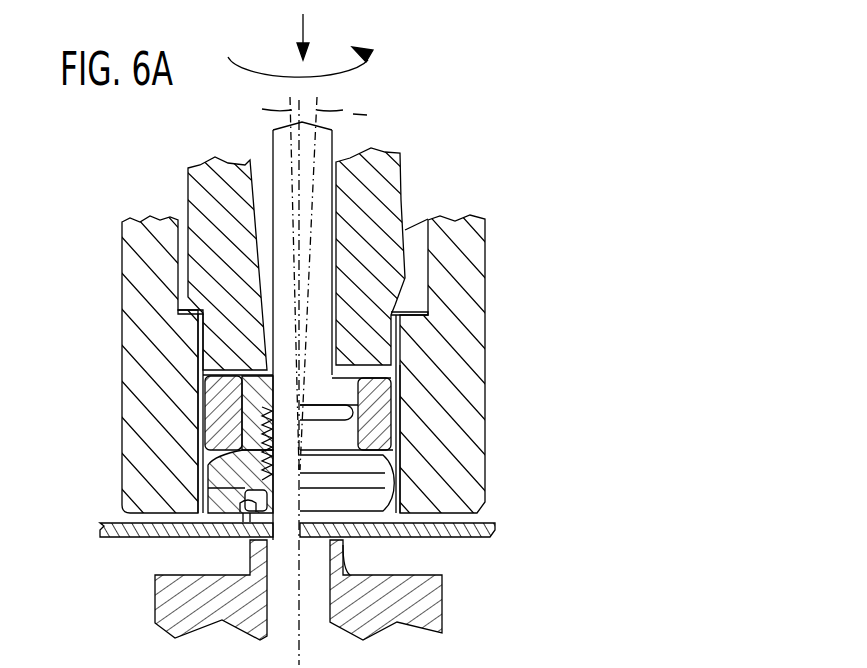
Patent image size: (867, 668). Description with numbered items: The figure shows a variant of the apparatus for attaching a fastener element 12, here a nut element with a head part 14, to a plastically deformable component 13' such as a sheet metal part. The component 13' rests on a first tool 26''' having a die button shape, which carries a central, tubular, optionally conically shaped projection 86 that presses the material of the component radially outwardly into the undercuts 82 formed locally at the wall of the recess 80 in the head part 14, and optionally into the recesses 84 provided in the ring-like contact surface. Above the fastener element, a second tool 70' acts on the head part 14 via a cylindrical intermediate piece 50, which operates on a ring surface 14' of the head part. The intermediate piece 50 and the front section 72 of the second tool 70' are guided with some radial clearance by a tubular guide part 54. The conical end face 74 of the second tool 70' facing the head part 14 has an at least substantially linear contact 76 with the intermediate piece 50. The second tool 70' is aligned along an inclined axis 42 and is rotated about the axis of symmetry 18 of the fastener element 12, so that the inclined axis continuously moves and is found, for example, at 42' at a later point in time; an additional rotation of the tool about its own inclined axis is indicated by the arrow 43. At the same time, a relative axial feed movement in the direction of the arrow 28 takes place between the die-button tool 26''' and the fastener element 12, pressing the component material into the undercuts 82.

The axis of symmetry 18 is at (300, 127).
The arrow of relative feed movement 28 is at (304, 24).
The arrow of additional rotary movement 43 is at (370, 54).
The inclined axis 42 is at (247, 94).
The inclined axis at a later point in time 42' is at (363, 96).
The second tool 70' is at (334, 268).
The tubular guide part 54 is at (460, 277).
The front section of the second tool 72 is at (213, 333).
The conical end face 74 is at (217, 362).
The linear contact 76 is at (217, 390).
The cylindrical intermediate piece 50 is at (397, 377).
The ring surface of the head part 14' is at (175, 428).
The recess 80 is at (252, 480).
The undercuts 82 is at (252, 495).
The head part 14 is at (416, 436).
The fastener element 12 is at (382, 487).
The recesses 84 is at (245, 505).
The central tubular projection 86 is at (343, 550).
The component 13' is at (328, 553).
The first tool 26''' is at (336, 590).